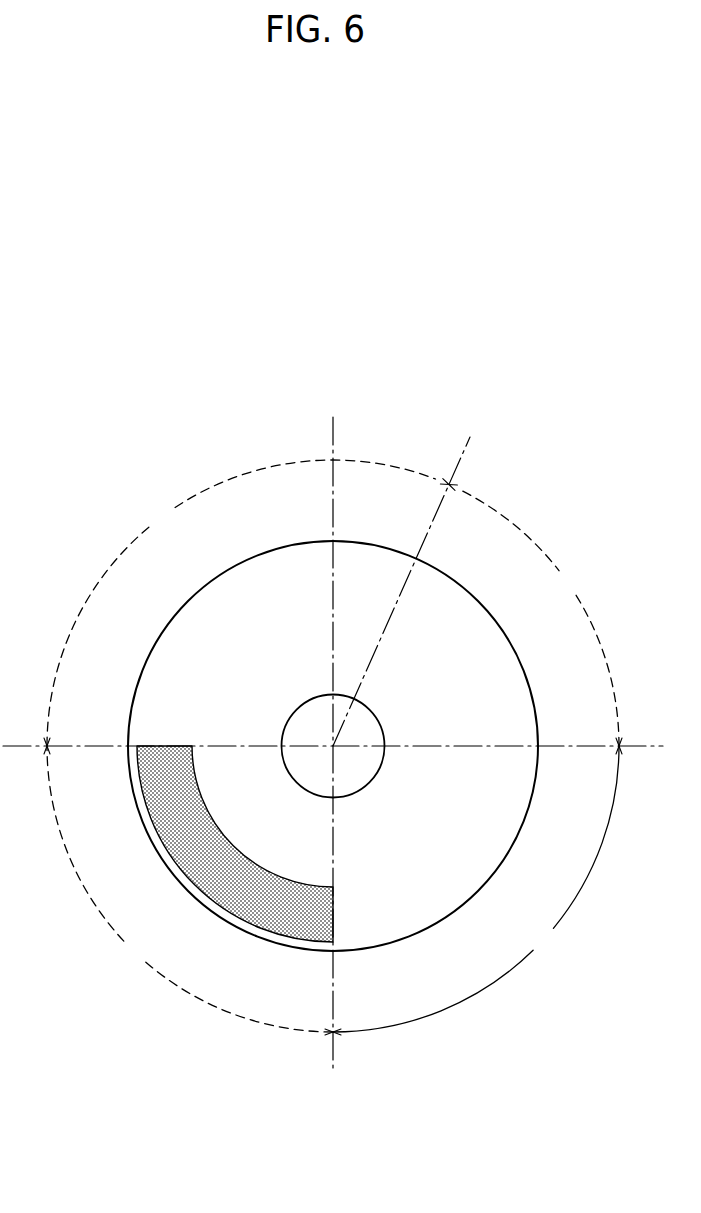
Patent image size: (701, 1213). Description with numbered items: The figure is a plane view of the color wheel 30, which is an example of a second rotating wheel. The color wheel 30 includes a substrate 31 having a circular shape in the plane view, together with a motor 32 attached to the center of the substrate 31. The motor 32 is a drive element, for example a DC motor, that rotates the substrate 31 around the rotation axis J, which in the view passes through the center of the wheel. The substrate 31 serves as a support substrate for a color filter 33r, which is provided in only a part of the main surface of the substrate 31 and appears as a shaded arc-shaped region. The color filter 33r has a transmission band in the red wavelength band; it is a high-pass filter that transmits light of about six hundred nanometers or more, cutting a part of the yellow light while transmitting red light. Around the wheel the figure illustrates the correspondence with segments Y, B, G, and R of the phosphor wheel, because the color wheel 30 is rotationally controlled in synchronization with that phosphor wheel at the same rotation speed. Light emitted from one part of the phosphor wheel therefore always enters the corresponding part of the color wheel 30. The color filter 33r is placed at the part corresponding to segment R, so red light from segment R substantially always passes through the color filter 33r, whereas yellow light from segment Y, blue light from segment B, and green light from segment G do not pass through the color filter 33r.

The color wheel 30 is at (333, 742).
The substrate 31 is at (370, 548).
The motor 32 is at (300, 717).
The color filter 33r is at (243, 902).
The rotation axis J is at (333, 746).
The segment Y is at (241, 603).
The segment B is at (541, 618).
The segment G is at (476, 889).
The segment R is at (190, 889).